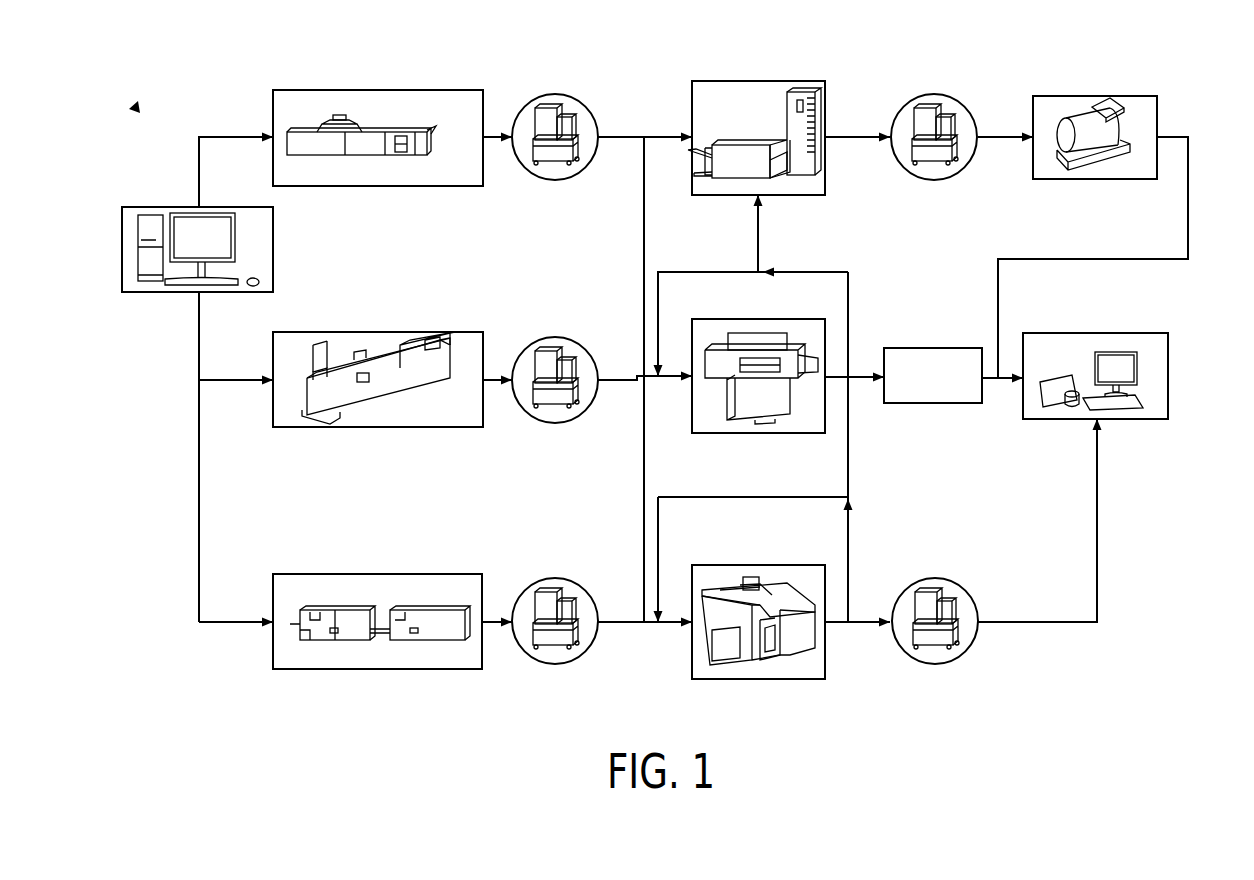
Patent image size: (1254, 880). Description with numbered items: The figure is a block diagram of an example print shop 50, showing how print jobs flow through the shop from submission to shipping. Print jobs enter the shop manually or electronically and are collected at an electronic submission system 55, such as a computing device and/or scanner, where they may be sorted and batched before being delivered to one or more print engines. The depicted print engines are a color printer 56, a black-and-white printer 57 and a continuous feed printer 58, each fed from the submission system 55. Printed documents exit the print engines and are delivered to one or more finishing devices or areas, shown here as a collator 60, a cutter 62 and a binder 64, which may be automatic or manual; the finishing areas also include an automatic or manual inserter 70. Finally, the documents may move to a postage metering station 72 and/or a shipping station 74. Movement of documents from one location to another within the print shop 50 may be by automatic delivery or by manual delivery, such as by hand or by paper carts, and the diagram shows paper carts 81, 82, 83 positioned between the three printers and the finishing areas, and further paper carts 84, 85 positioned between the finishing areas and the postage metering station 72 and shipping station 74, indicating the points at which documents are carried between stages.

The print shop 50 is at (137, 110).
The electronic submission system 55 is at (153, 293).
The color printer 56 is at (397, 187).
The black-and-white printer 57 is at (397, 428).
The continuous feed printer 58 is at (395, 670).
The collator 60 is at (765, 196).
The cutter 62 is at (768, 434).
The binder 64 is at (768, 680).
The inserter 70 is at (930, 404).
The postage metering station 72 is at (1088, 180).
The shipping station 74 is at (1122, 420).
The paper cart 81 is at (553, 181).
The paper cart 82 is at (555, 423).
The paper cart 83 is at (555, 665).
The paper cart 84 is at (932, 181).
The paper cart 85 is at (932, 665).